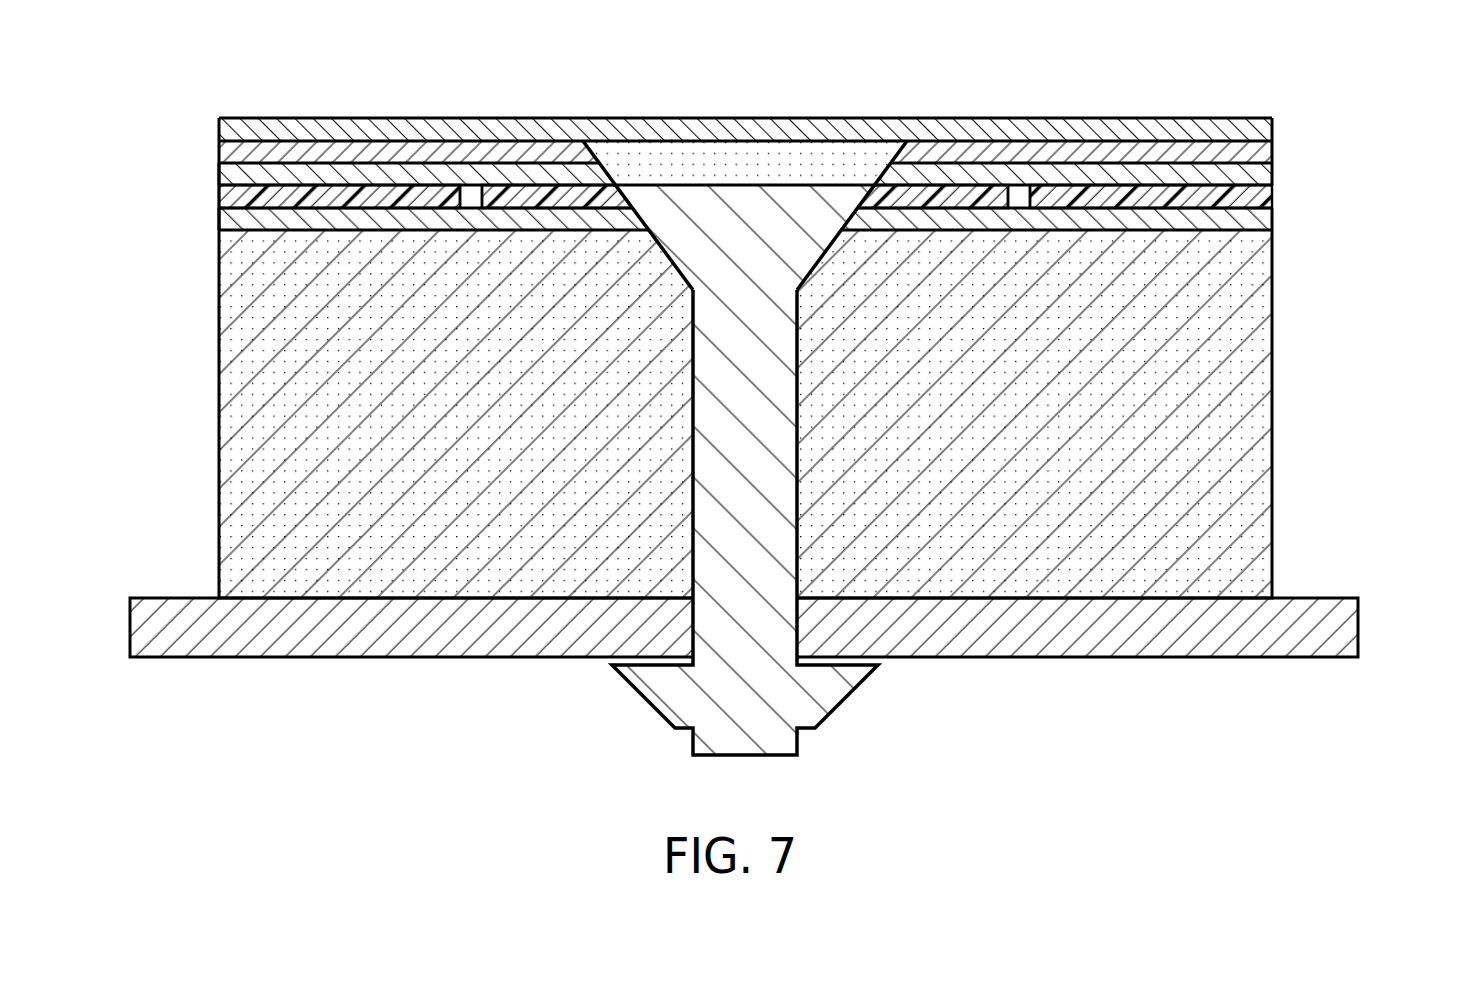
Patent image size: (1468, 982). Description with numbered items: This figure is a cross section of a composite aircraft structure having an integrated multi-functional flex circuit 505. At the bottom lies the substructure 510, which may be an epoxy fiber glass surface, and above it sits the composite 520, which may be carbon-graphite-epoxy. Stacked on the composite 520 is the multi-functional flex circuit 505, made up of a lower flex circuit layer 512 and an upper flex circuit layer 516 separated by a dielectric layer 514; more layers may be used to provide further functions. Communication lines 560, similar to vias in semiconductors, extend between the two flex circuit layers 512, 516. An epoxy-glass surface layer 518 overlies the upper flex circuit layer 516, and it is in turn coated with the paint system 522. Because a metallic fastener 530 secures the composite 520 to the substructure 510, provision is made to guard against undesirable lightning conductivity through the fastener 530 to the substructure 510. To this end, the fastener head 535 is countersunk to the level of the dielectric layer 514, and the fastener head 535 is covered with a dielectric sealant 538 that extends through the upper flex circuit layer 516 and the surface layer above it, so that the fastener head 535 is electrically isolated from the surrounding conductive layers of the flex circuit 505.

The multi-functional flex circuit 505 is at (213, 160).
The substructure 510 is at (1350, 627).
The flex circuit layer 512 is at (1262, 215).
The dielectric layer 514 is at (378, 197).
The flex circuit layer 516 is at (1262, 177).
The epoxy-glass surface layer 518 is at (219, 153).
The composite 520 is at (1258, 432).
The paint system 522 is at (243, 126).
The metallic fastener 530 is at (797, 428).
The fastener head 535 is at (853, 212).
The dielectric sealant 538 is at (785, 155).
The communication lines 560 is at (472, 198).